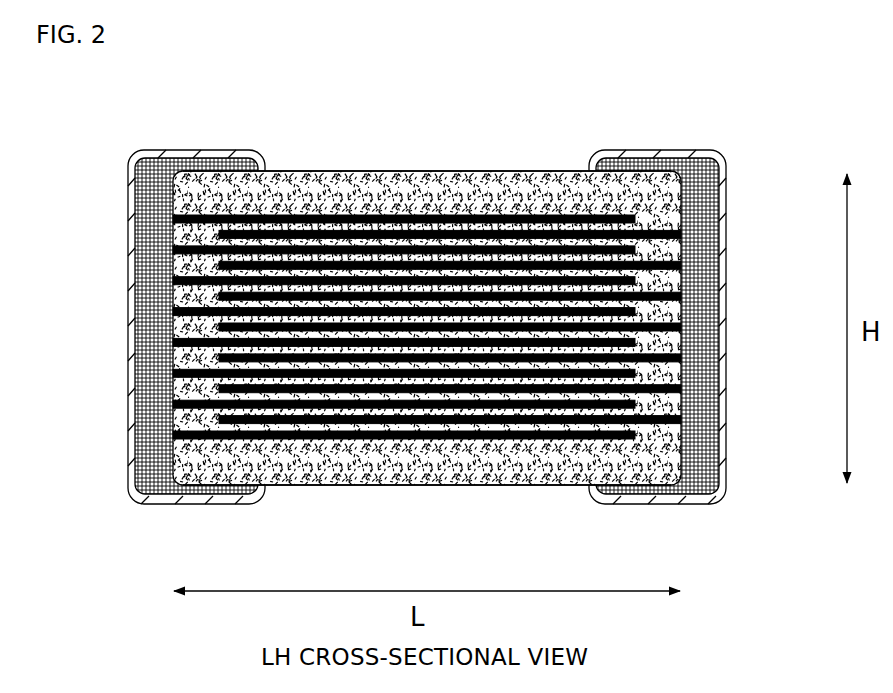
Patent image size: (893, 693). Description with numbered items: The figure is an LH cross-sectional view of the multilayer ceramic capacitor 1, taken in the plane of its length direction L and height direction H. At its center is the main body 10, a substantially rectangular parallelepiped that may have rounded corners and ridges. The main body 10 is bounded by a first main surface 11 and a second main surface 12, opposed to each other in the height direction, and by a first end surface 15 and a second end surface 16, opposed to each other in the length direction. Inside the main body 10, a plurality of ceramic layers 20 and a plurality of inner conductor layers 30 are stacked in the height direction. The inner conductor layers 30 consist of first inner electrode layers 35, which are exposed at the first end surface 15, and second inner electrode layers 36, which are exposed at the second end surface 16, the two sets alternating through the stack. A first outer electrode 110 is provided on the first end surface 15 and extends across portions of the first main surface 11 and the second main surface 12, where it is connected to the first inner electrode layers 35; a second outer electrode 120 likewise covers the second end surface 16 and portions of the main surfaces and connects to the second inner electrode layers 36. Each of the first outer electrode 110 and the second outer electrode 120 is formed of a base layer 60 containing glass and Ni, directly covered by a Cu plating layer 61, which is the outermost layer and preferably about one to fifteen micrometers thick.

The multilayer ceramic capacitor 1 is at (428, 308).
The main body 10 is at (428, 321).
The first main surface 11 is at (406, 163).
The second main surface 12 is at (432, 478).
The first end surface 15 is at (165, 275).
The second end surface 16 is at (673, 300).
The ceramic layers 20 is at (243, 425).
The inner conductor layers 30 is at (428, 344).
The first inner electrode layers 35 is at (183, 427).
The second inner electrode layers 36 is at (657, 354).
The base layer 60 is at (145, 347).
The Cu plating layer 61 is at (127, 323).
The first outer electrode 110 is at (150, 344).
The second outer electrode 120 is at (704, 343).